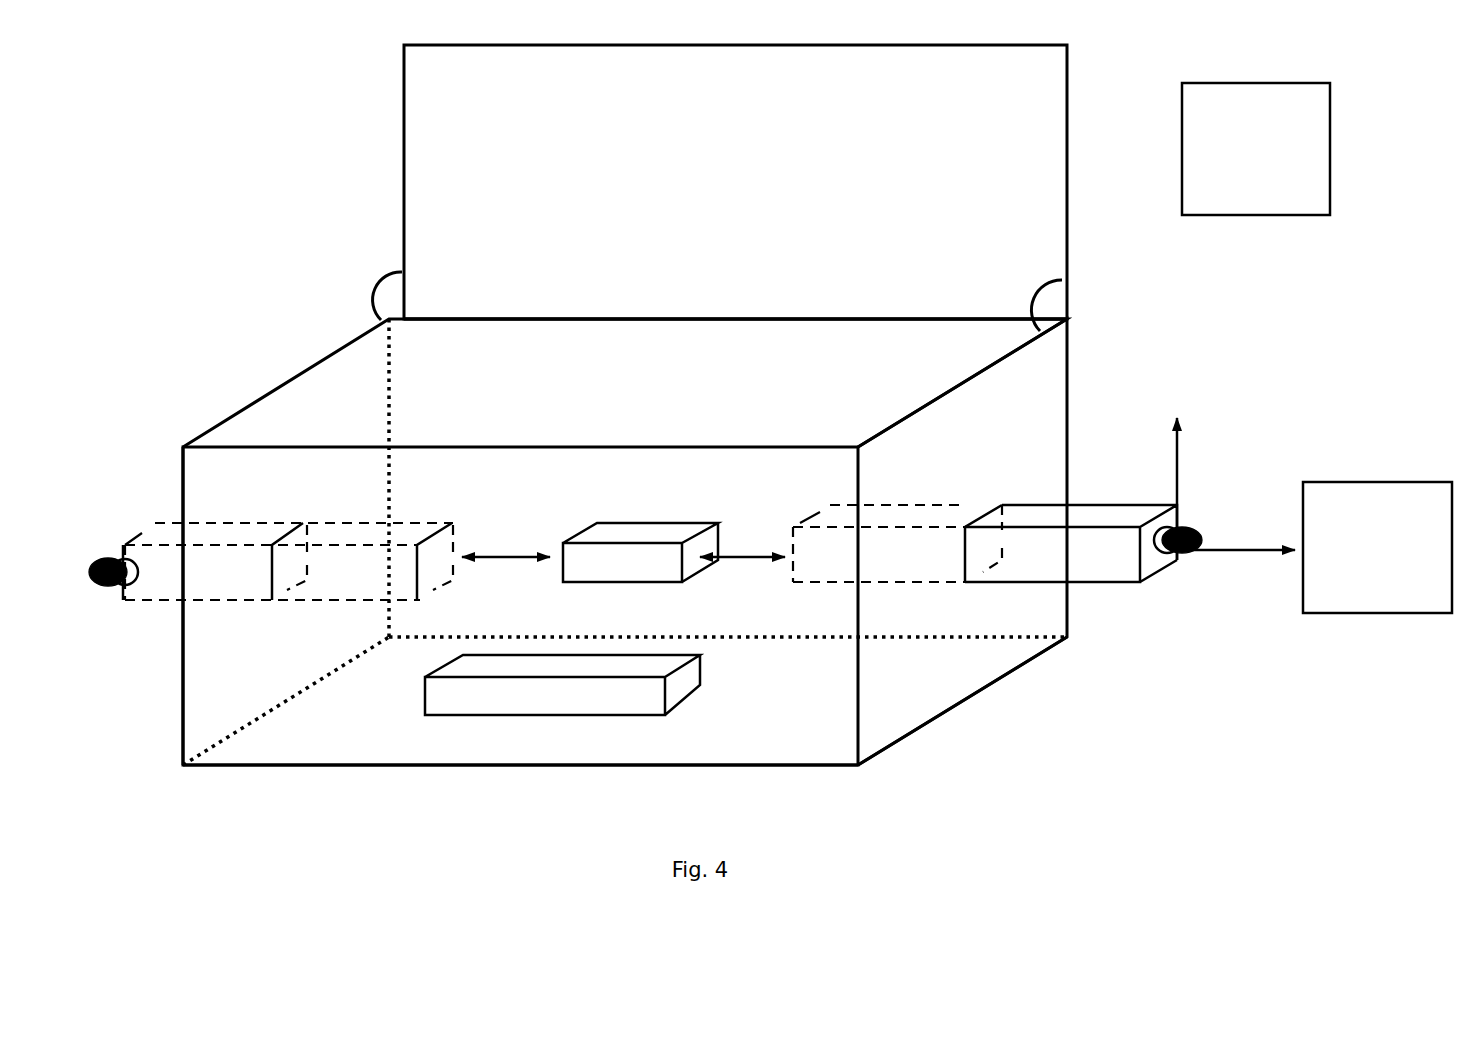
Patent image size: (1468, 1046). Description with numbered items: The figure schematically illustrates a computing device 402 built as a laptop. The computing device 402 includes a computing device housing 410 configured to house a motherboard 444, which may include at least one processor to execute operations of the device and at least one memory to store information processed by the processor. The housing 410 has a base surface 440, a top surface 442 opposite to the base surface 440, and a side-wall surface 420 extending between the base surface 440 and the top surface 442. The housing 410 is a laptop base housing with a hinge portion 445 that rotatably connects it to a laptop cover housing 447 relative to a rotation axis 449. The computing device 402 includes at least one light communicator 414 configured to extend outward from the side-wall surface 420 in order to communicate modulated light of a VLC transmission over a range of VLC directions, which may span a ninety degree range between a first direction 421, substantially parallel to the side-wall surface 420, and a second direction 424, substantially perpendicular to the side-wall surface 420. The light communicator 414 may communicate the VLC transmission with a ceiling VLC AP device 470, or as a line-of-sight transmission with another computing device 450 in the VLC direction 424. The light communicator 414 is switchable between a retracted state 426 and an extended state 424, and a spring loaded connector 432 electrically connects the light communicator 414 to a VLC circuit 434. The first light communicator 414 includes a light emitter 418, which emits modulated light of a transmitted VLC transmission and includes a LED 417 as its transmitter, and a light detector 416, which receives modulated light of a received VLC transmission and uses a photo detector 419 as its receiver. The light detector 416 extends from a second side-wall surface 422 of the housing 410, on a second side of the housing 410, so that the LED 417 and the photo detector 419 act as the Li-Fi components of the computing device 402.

The computing device 402 is at (1190, 818).
The computing device housing 410 is at (917, 725).
The light communicator 414 is at (472, 520).
The light detector 416 is at (140, 540).
The LED 417 is at (1197, 557).
The light emitter 418 is at (1100, 498).
The photo detector 419 is at (105, 587).
The side-wall surface 420 is at (1025, 438).
The first direction 421 is at (1180, 480).
The second side-wall surface 422 is at (157, 665).
The second direction 424 is at (1242, 547).
The retracted state 426 is at (307, 625).
The spring loaded connector 432 is at (525, 558).
The VLC circuit 434 is at (628, 533).
The base surface 440 is at (300, 788).
The top surface 442 is at (340, 375).
The motherboard 444 is at (677, 697).
The hinge portion 445 is at (372, 287).
The laptop cover housing 447 is at (1067, 183).
The rotation axis 449 is at (688, 318).
The another computing device 450 is at (1348, 480).
The ceiling VLC AP device 470 is at (1330, 100).